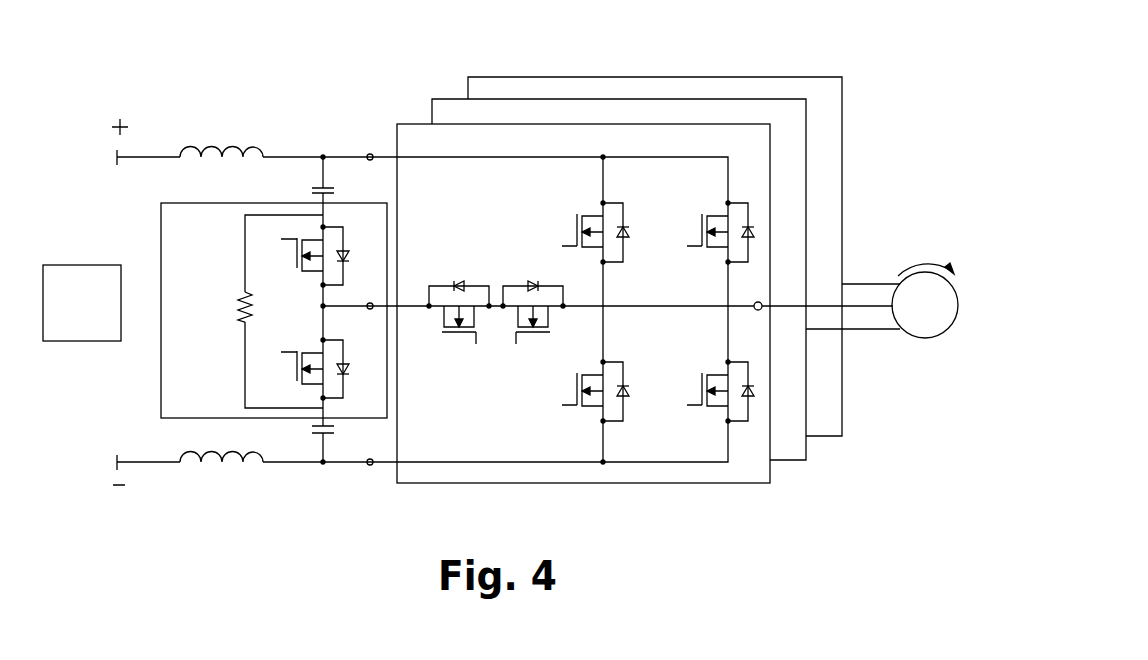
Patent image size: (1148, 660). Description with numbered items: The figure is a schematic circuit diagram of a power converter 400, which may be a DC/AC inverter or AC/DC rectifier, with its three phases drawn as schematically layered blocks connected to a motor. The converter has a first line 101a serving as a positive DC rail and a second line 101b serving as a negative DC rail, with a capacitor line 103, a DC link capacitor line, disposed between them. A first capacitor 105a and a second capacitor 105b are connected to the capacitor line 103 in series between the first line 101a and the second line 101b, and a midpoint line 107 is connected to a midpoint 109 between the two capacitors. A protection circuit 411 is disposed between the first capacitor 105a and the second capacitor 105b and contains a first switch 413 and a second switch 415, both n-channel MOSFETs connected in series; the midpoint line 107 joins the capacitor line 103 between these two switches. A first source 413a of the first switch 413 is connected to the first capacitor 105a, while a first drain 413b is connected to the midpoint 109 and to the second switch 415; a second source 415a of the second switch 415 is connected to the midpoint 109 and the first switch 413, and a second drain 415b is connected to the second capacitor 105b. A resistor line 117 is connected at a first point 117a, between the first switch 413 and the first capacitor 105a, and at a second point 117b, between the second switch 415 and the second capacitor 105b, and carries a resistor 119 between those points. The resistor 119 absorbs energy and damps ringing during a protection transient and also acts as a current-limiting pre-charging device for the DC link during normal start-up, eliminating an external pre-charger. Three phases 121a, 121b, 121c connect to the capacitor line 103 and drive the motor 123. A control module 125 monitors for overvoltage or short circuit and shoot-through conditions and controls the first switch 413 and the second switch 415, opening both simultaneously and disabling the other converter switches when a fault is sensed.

The power converter 400 is at (230, 76).
The first line 101a is at (314, 157).
The second line 101b is at (296, 464).
The capacitor line 103 is at (317, 178).
The first capacitor 105a is at (335, 190).
The second capacitor 105b is at (335, 433).
The midpoint line 107 is at (347, 305).
The midpoint 109 is at (322, 307).
The resistor line 117 is at (245, 375).
The first point 117a is at (321, 216).
The second point 117b is at (322, 407).
The resistor 119 is at (232, 309).
The first phase 121a is at (413, 124).
The second phase 121b is at (452, 99).
The third phase 121c is at (503, 77).
The motor 123 is at (926, 340).
The control module 125 is at (96, 313).
The protection circuit 411 is at (195, 228).
The first switch 413 is at (283, 259).
The first source 413a is at (327, 226).
The first drain 413b is at (322, 286).
The second switch 415 is at (283, 375).
The second source 415a is at (327, 341).
The second drain 415b is at (327, 401).